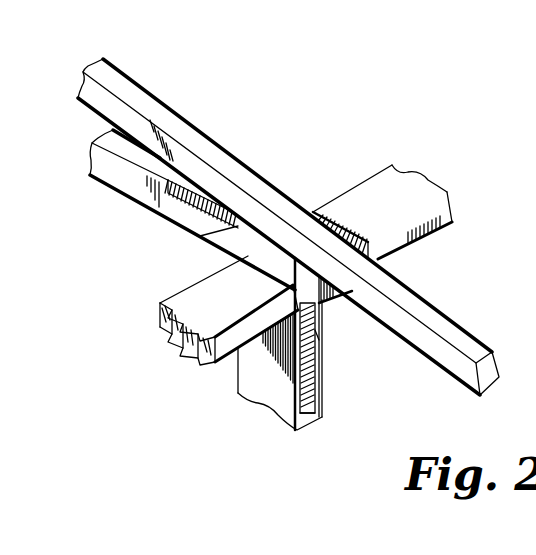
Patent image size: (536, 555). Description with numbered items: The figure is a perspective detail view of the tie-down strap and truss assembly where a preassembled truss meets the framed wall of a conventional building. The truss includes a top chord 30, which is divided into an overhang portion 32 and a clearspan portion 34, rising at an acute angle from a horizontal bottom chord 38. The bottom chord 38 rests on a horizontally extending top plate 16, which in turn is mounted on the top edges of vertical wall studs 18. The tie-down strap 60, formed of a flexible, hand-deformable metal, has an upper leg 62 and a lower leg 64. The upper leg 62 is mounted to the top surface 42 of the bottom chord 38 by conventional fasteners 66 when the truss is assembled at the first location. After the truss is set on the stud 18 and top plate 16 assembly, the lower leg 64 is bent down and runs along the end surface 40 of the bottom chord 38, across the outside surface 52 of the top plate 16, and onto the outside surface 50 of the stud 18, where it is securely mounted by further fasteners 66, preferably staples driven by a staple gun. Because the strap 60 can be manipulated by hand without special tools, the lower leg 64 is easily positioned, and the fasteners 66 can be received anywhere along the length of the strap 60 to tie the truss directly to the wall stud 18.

The top plate 16 is at (395, 201).
The stud 18 is at (302, 350).
The top chord 30 is at (297, 227).
The overhang portion 32 is at (481, 341).
The clearspan portion 34 is at (205, 133).
The bottom chord 38 is at (192, 219).
The end surface 40 is at (293, 272).
The top surface 42 is at (152, 172).
The outside surface 50 is at (318, 417).
The outside surface 52 is at (442, 224).
The tie-down strap 60 is at (228, 250).
The upper leg 62 is at (213, 207).
The lower leg 64 is at (316, 363).
The fasteners 66 is at (200, 236).